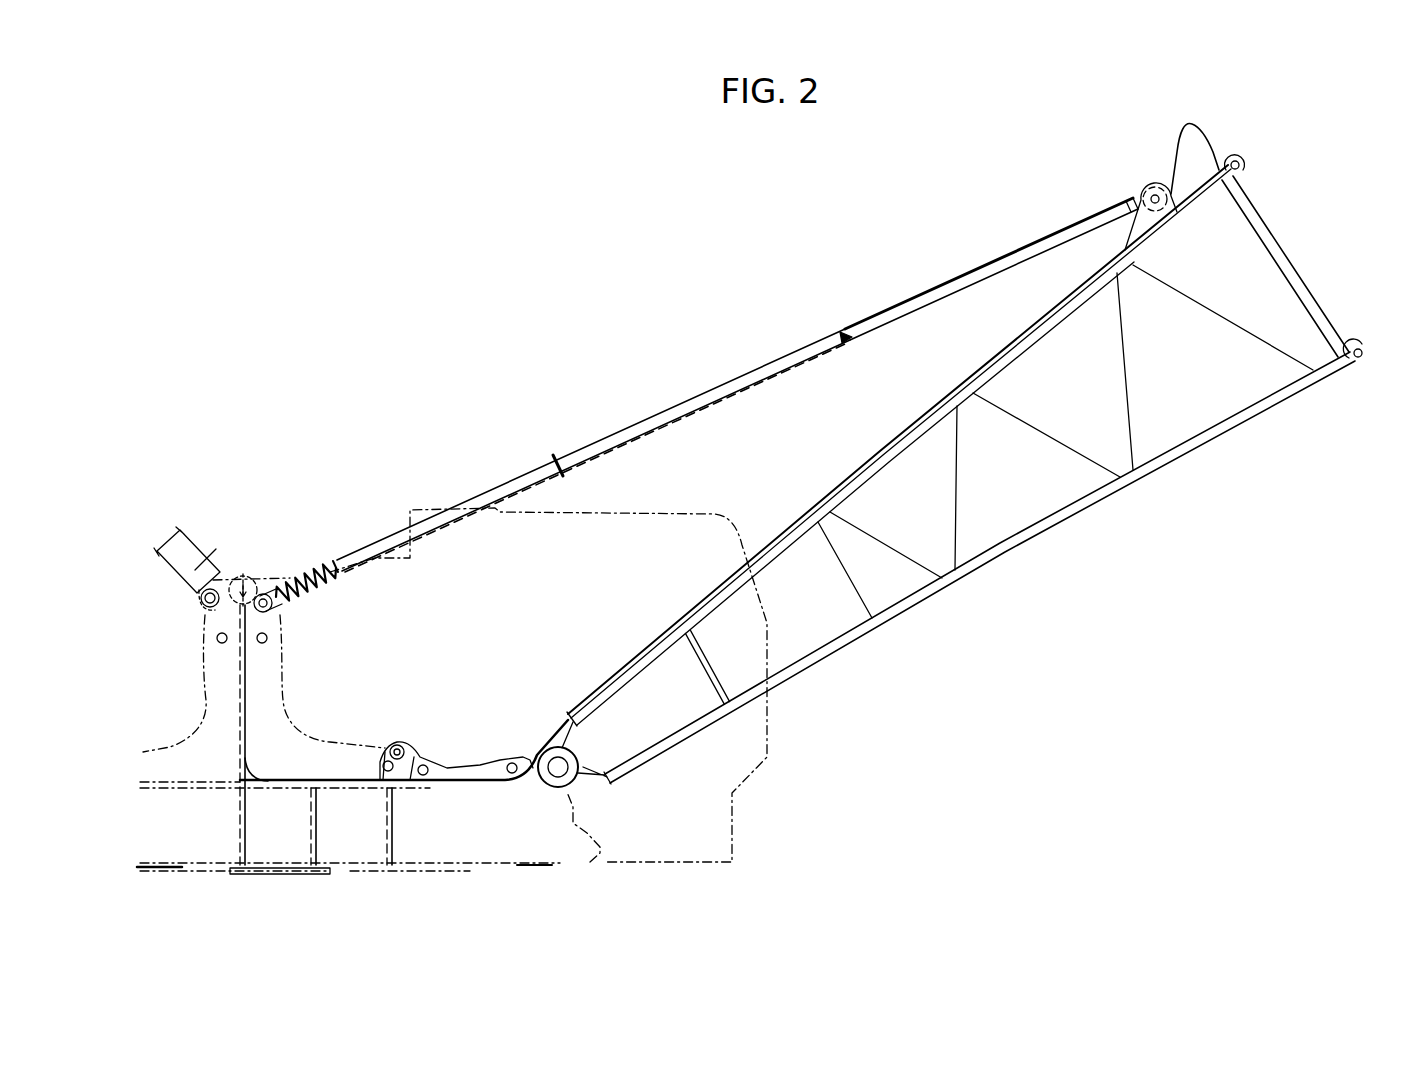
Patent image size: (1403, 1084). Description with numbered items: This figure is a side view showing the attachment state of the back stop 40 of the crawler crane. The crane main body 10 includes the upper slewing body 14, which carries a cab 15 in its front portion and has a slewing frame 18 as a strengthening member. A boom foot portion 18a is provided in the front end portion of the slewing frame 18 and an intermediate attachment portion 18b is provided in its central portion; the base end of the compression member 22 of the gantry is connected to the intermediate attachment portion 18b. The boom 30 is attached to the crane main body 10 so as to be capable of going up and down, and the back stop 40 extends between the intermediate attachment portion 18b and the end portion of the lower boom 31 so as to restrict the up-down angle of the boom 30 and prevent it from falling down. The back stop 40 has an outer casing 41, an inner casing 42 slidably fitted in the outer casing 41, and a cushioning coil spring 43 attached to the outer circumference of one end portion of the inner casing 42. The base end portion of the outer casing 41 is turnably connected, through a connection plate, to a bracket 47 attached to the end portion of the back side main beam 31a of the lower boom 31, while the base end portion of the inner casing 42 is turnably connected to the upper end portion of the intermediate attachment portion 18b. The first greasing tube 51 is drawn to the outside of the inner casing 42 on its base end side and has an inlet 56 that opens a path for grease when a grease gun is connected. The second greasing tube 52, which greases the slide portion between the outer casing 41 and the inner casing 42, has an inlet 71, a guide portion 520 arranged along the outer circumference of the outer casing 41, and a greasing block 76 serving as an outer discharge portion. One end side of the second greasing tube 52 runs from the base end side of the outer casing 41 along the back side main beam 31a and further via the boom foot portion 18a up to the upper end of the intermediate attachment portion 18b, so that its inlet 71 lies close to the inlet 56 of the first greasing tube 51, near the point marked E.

The crane main body 10 is at (735, 818).
The upper slewing body 14 is at (197, 866).
The cab 15 is at (768, 727).
The slewing frame 18 is at (350, 869).
The boom foot portion 18a is at (572, 791).
The intermediate attachment portion 18b is at (283, 637).
The compression member 22 is at (180, 563).
The boom 30 is at (1233, 428).
The lower boom 31 is at (1027, 533).
The back side main beam 31a is at (877, 478).
The back stop 40 is at (685, 401).
The outer casing 41 is at (909, 312).
The inner casing 42 is at (520, 485).
The cushioning coil spring 43 is at (328, 586).
The bracket 47 is at (1181, 137).
The first greasing tube 51 is at (452, 529).
The second greasing tube 52 is at (802, 351).
The inlet 56 is at (268, 596).
The inlet 71 is at (248, 584).
The greasing block 76 is at (562, 451).
The guide portion 520 is at (991, 258).
The point E is at (236, 578).